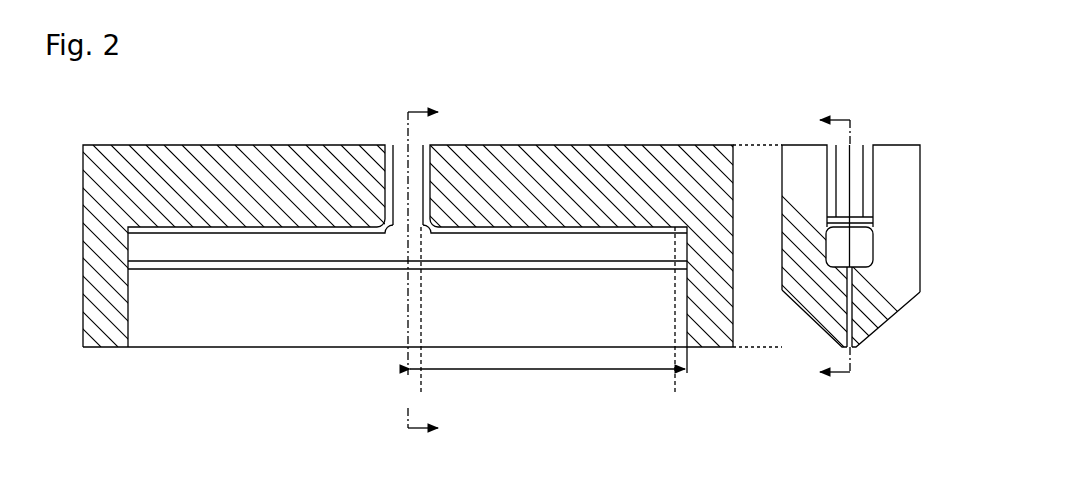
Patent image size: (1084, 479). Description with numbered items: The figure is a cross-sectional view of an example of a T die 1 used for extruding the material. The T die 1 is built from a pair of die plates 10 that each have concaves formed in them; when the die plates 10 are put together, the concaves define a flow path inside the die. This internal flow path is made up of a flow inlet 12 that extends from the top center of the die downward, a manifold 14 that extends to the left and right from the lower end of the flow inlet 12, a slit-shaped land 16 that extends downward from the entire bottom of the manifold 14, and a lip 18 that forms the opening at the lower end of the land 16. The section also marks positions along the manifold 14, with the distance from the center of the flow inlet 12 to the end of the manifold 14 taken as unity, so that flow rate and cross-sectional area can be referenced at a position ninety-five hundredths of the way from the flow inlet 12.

The T die 1 is at (522, 128).
The die plate 10 is at (608, 143).
The flow inlet 12 is at (402, 150).
The manifold 14 is at (135, 245).
The land 16 is at (135, 300).
The lip 18 is at (198, 348).